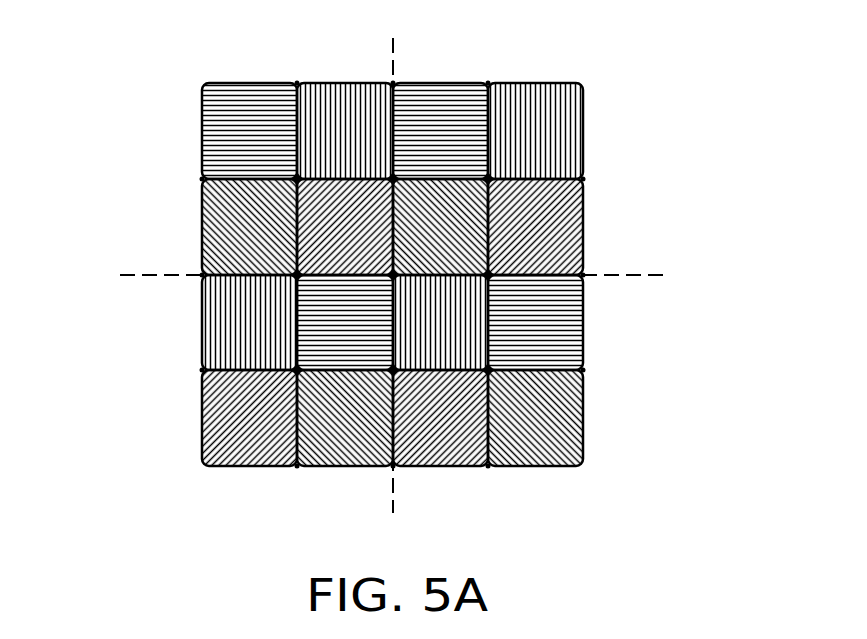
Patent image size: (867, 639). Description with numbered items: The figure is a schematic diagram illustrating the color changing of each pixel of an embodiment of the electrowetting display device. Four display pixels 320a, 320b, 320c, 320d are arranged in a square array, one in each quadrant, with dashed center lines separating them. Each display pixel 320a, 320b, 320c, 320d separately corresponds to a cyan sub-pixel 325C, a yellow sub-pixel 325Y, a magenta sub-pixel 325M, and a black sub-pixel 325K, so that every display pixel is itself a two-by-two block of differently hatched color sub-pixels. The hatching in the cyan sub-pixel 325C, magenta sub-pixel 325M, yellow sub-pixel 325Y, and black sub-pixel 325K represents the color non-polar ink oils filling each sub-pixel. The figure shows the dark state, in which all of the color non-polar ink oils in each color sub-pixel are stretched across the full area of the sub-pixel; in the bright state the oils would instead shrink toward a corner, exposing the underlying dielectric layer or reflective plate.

The display pixel 320a is at (563, 145).
The display pixel 320b is at (151, 54).
The display pixel 320c is at (151, 481).
The display pixel 320d is at (619, 481).
The cyan sub-pixel 325C is at (458, 104).
The magenta sub-pixel 325M is at (565, 142).
The yellow sub-pixel 325Y is at (462, 195).
The black sub-pixel 325K is at (565, 233).